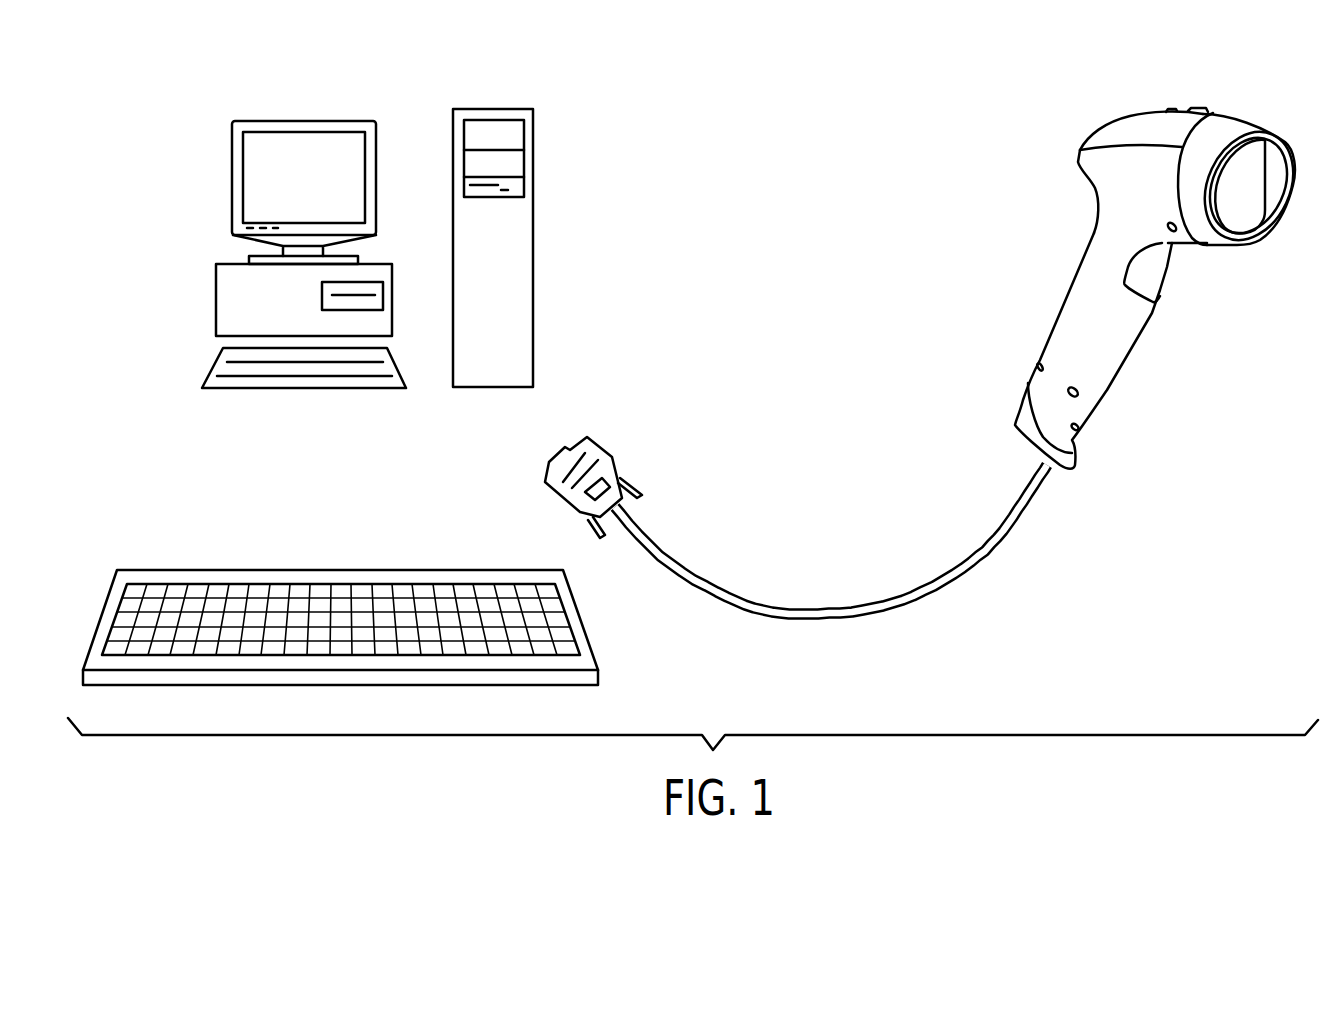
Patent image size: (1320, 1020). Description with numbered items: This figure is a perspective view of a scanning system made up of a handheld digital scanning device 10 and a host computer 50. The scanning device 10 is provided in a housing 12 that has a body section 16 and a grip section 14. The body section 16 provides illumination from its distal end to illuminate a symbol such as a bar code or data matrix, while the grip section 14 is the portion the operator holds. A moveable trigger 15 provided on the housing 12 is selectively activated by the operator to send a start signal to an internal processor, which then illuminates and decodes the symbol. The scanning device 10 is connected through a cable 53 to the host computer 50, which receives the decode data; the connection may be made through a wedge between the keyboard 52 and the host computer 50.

The handheld digital scanning device 10 is at (1251, 98).
The housing 12 is at (1080, 177).
The grip section 14 is at (1105, 392).
The moveable trigger 15 is at (1173, 268).
The body section 16 is at (1140, 110).
The host computer 50 is at (200, 303).
The keyboard 52 is at (342, 687).
The cable 53 is at (887, 619).